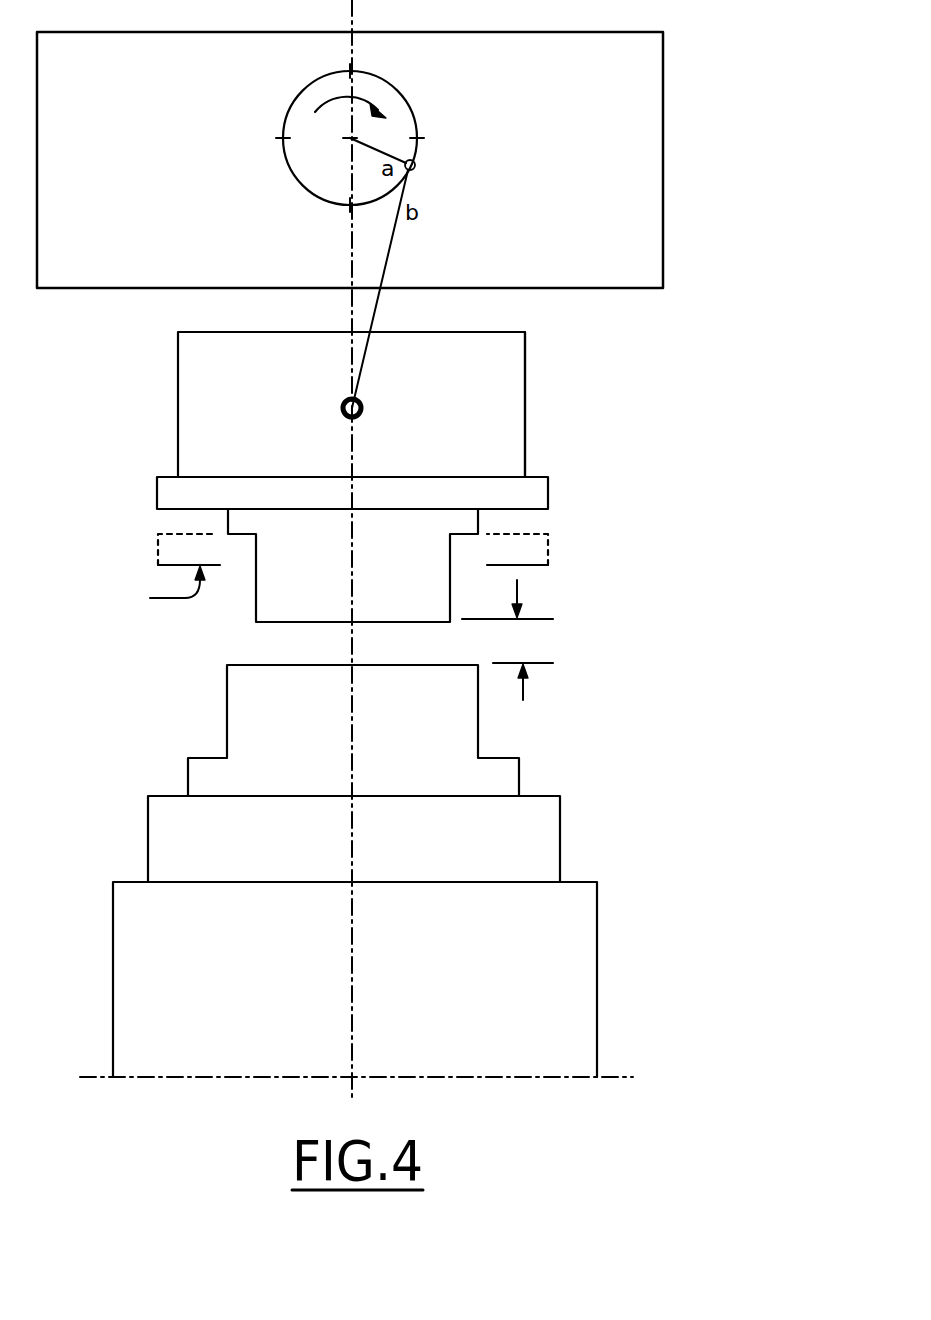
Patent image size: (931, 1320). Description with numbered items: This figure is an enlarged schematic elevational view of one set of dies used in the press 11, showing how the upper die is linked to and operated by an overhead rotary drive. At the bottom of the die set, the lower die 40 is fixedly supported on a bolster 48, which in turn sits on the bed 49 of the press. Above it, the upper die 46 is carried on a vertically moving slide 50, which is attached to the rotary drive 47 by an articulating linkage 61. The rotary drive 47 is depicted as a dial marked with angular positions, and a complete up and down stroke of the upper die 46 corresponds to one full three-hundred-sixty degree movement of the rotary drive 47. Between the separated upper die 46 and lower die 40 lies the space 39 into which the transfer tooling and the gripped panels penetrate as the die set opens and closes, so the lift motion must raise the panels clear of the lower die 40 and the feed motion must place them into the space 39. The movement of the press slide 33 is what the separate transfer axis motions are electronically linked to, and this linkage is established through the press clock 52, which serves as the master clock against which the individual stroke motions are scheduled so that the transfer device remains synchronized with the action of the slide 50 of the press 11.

The single press 11 is at (733, 250).
The rotary drive 47 is at (405, 95).
The press clock 52 is at (305, 86).
The articulating linkage 61 is at (377, 311).
The slide 50 is at (190, 420).
The press slide 33 is at (526, 403).
The upper die 46 is at (268, 593).
The space 39 is at (537, 640).
The lower die 40 is at (463, 725).
The bolster 48 is at (545, 840).
The bed 49 is at (580, 945).